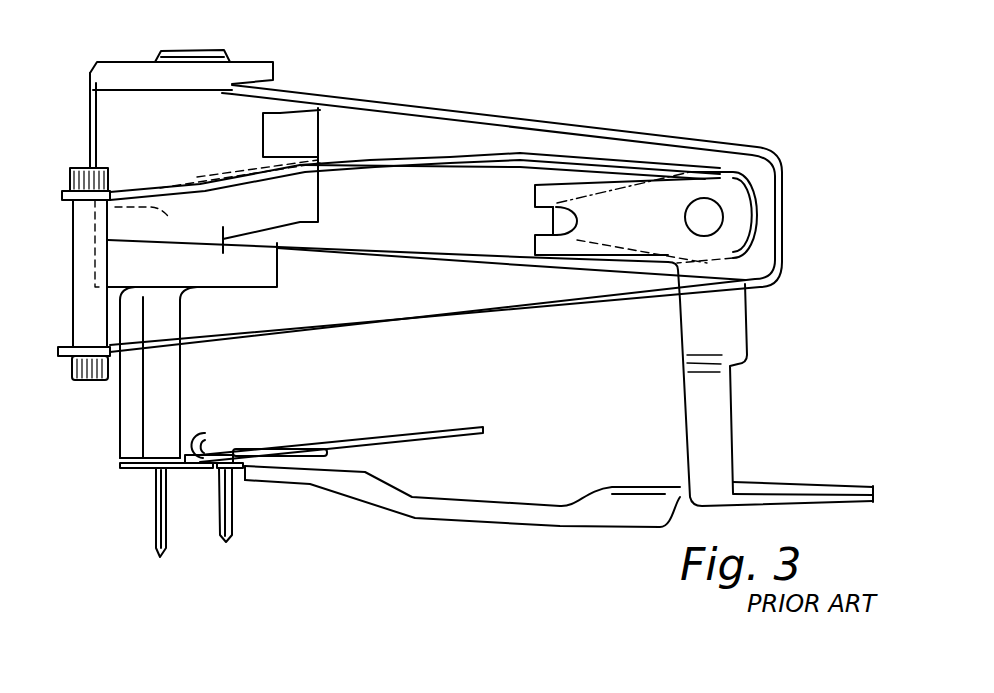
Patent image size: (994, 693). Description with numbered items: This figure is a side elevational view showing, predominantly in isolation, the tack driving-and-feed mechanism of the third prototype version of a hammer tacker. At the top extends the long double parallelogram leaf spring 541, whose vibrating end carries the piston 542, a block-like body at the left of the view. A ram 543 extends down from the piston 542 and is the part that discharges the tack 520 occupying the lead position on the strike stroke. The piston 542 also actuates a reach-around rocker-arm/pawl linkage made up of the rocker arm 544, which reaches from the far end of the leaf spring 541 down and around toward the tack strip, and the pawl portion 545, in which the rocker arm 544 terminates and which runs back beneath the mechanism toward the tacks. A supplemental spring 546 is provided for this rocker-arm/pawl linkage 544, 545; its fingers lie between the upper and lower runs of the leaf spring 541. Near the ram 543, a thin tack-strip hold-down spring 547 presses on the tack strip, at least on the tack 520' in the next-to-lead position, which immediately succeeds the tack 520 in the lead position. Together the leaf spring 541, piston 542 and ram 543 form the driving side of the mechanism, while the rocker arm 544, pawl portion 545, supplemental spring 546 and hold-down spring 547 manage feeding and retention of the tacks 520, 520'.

The double parallelogram leaf spring 541 is at (413, 108).
The piston 542 is at (197, 153).
The ram 543 is at (168, 387).
The rocker arm 544 is at (733, 341).
The pawl portion 545 is at (316, 480).
The supplemental spring 546 is at (372, 160).
The tack-strip hold-down spring 547 is at (392, 434).
The tack 520 is at (120, 512).
The tack in next-to-lead position 520' is at (251, 505).